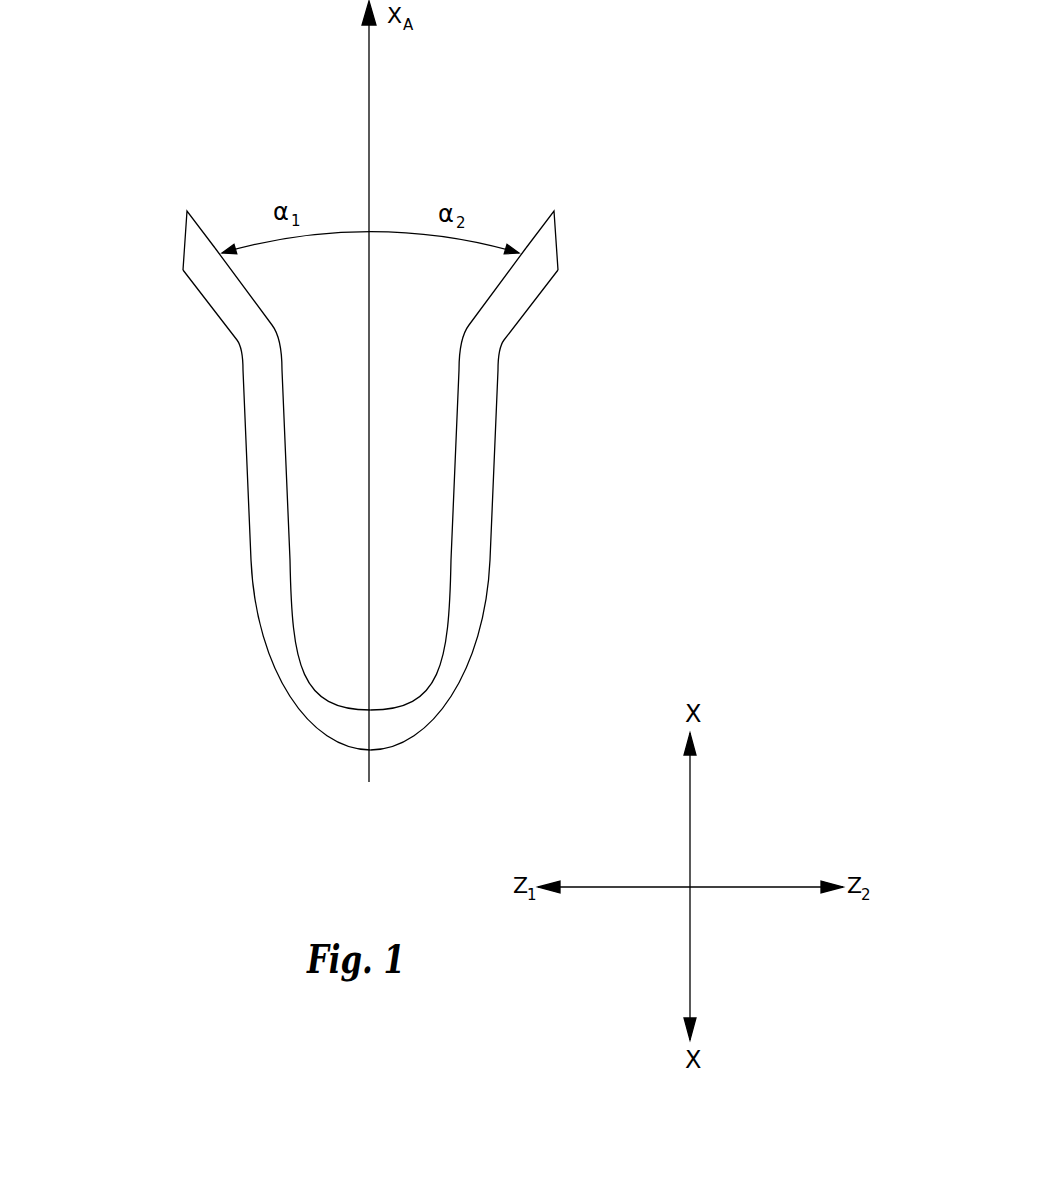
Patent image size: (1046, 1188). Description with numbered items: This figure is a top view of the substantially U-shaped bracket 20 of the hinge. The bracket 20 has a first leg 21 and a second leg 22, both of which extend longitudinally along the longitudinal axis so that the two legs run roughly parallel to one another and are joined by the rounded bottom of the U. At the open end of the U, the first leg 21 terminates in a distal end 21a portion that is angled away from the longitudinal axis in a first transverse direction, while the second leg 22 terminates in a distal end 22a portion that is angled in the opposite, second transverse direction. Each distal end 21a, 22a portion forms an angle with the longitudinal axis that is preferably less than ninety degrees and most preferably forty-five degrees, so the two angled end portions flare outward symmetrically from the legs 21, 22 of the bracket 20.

The bracket 20 is at (131, 104).
The first leg 21 is at (243, 421).
The second leg 22 is at (497, 408).
The distal end portion of the first leg 21a is at (186, 212).
The distal end portion of the second leg 22a is at (555, 217).